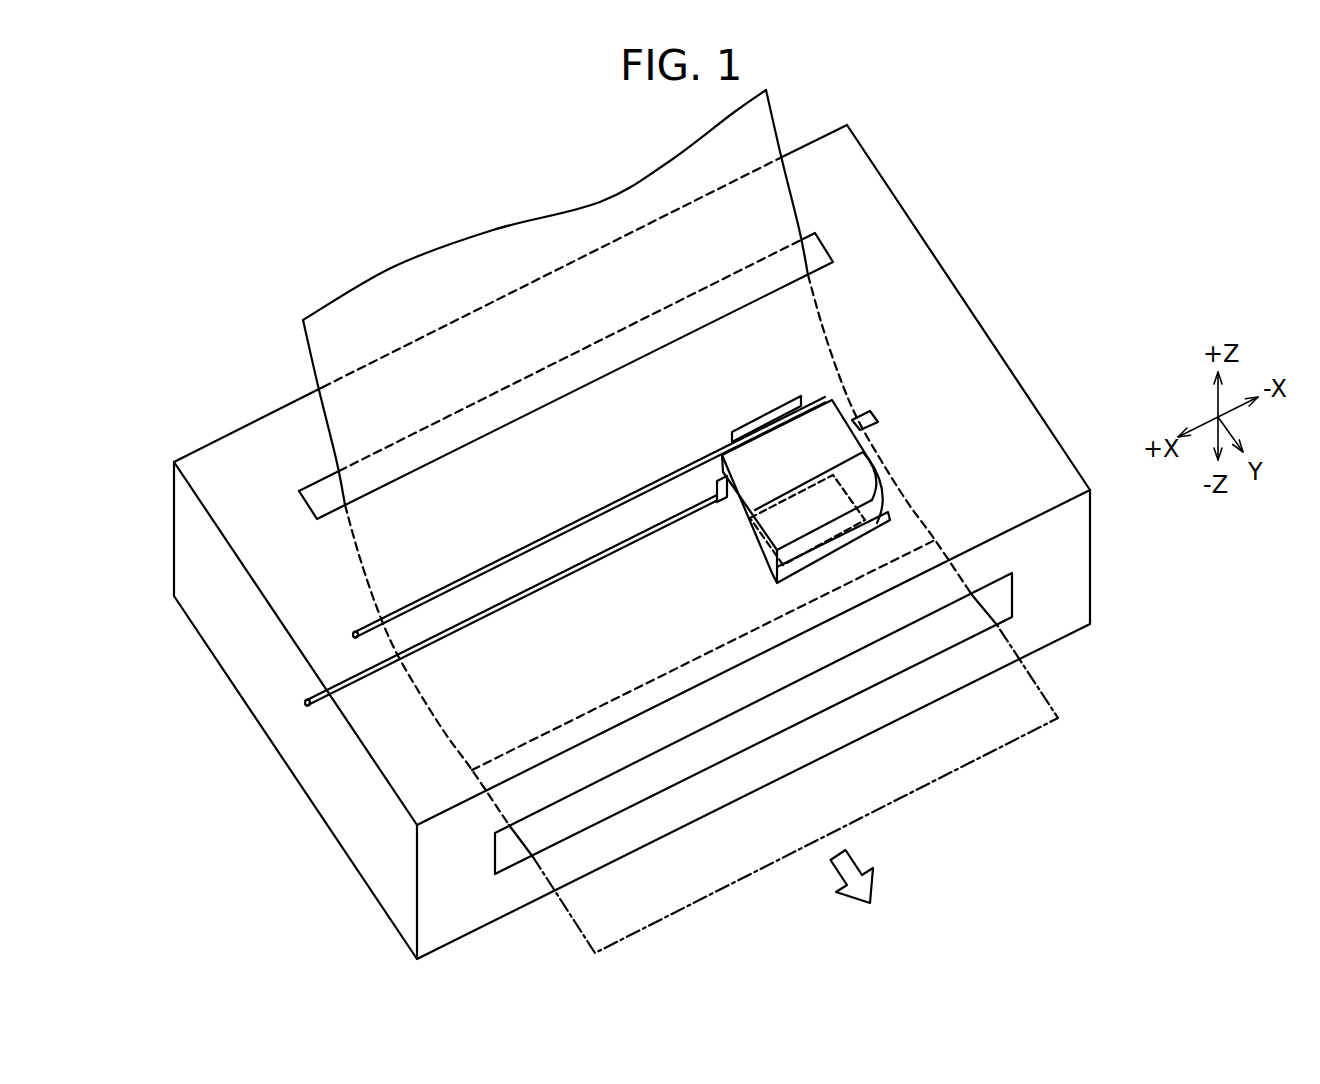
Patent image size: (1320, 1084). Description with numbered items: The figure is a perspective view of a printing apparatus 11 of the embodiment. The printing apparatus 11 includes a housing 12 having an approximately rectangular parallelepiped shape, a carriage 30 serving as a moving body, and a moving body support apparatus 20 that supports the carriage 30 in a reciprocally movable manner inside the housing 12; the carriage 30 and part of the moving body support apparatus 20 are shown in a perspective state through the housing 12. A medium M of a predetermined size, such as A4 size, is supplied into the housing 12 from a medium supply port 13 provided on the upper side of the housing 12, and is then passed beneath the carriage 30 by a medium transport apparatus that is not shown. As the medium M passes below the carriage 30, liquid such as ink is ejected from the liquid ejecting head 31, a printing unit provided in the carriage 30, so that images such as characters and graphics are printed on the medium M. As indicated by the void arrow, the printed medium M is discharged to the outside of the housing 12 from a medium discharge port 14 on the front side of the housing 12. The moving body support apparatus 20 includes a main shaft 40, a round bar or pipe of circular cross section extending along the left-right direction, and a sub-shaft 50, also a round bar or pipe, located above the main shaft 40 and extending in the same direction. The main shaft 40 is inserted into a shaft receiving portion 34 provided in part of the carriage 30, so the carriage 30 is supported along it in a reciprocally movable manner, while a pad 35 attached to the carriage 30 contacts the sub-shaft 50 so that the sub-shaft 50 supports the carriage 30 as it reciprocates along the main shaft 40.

The printing apparatus 11 is at (225, 258).
The housing 12 is at (185, 528).
The medium supply port 13 is at (818, 253).
The medium discharge port 14 is at (1003, 590).
The moving body support apparatus 20 is at (847, 372).
The carriage 30 is at (868, 462).
The liquid ejecting head 31 is at (762, 552).
The shaft receiving portion 34 is at (716, 501).
The pad 35 is at (775, 416).
The main shaft 40 is at (880, 419).
The sub-shaft 50 is at (838, 402).
The medium M is at (403, 282).